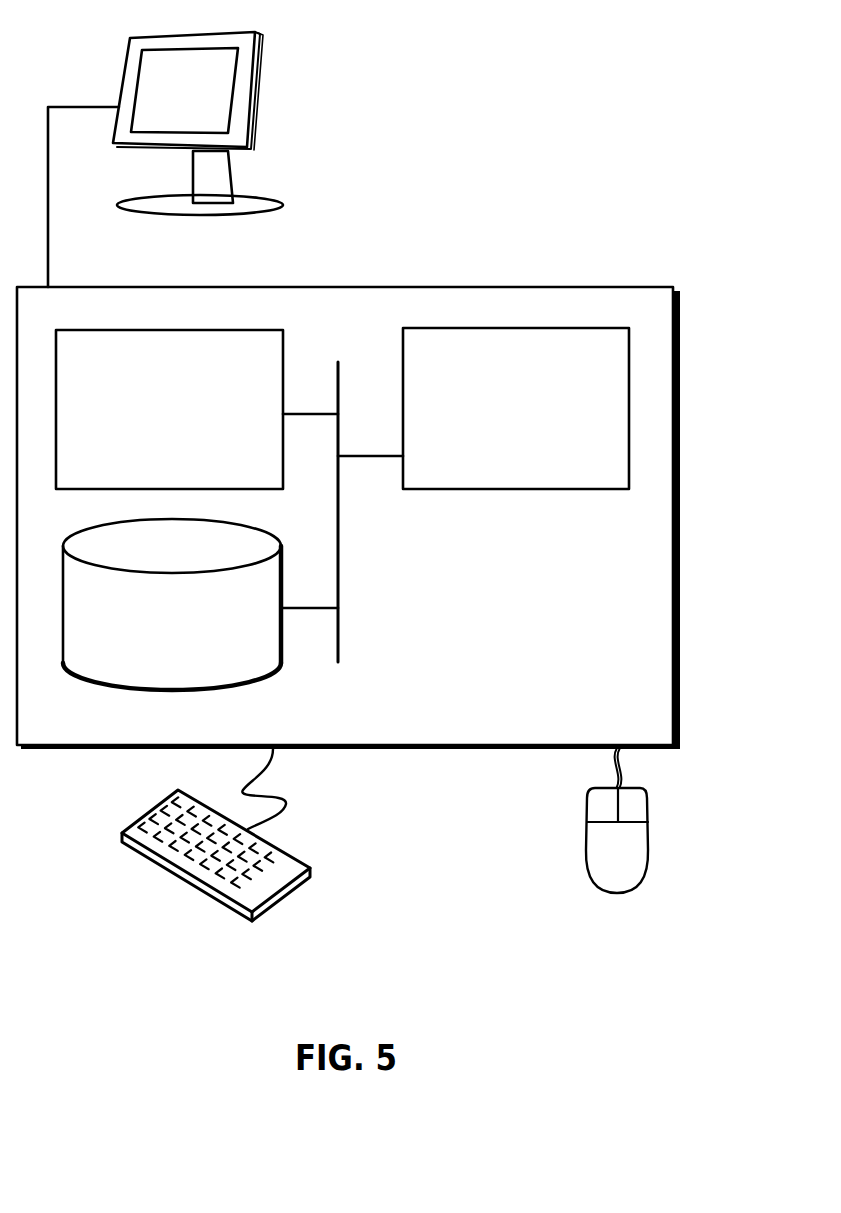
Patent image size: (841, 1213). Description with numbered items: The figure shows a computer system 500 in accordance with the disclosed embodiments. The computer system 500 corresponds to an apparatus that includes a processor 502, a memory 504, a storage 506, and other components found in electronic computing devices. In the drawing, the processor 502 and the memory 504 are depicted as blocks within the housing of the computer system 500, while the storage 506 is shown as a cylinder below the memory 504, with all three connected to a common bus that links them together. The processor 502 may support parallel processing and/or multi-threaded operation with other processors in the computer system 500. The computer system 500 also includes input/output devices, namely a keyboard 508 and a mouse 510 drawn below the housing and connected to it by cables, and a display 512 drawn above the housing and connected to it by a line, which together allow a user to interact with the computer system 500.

The computer system 500 is at (393, 267).
The processor 502 is at (498, 423).
The memory 504 is at (148, 421).
The storage 506 is at (156, 633).
The keyboard 508 is at (140, 853).
The mouse 510 is at (596, 865).
The display 512 is at (165, 159).